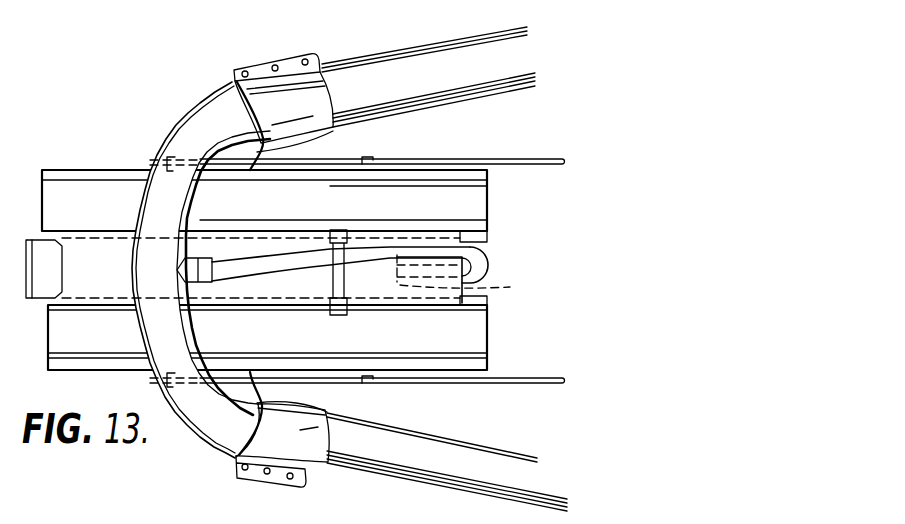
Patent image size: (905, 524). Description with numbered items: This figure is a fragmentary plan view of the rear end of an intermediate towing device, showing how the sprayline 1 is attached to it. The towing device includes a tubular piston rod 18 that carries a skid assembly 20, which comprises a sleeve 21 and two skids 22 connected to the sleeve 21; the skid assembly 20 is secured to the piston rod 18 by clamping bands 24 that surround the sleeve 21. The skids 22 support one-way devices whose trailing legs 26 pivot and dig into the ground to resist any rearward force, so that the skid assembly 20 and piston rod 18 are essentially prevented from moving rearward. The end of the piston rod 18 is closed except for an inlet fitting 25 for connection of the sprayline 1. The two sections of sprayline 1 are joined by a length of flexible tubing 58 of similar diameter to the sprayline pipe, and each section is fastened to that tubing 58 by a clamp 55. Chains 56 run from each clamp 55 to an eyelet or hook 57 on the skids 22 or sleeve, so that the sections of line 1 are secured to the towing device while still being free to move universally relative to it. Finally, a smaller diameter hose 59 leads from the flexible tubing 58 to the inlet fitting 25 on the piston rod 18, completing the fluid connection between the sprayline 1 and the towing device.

The sprayline 1 is at (507, 75).
The tubular piston rod 18 is at (47, 275).
The skid assembly 20 is at (500, 209).
The sleeve 21 is at (292, 248).
The skids 22 is at (85, 180).
The clamping bands 24 is at (345, 315).
The inlet fitting 25 is at (468, 275).
The trailing legs 26 is at (482, 158).
The clamp 55 is at (319, 66).
The chains 56 is at (313, 139).
The eyelet or hook 57 is at (248, 174).
The flexible tubing 58 is at (155, 318).
The smaller diameter hose 59 is at (211, 282).